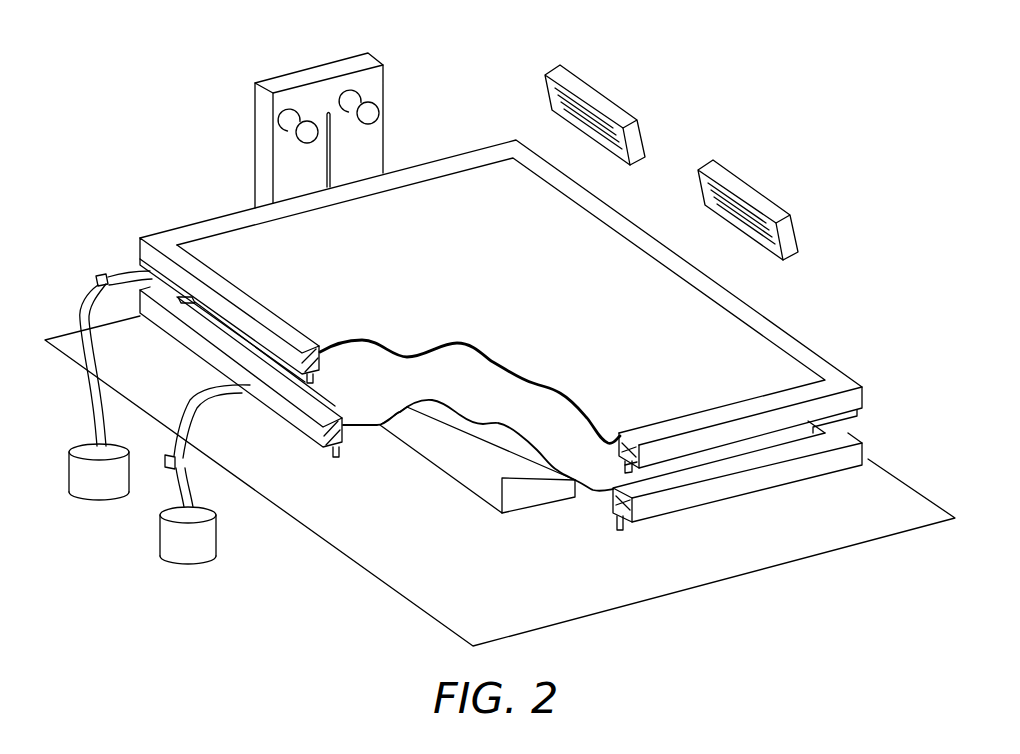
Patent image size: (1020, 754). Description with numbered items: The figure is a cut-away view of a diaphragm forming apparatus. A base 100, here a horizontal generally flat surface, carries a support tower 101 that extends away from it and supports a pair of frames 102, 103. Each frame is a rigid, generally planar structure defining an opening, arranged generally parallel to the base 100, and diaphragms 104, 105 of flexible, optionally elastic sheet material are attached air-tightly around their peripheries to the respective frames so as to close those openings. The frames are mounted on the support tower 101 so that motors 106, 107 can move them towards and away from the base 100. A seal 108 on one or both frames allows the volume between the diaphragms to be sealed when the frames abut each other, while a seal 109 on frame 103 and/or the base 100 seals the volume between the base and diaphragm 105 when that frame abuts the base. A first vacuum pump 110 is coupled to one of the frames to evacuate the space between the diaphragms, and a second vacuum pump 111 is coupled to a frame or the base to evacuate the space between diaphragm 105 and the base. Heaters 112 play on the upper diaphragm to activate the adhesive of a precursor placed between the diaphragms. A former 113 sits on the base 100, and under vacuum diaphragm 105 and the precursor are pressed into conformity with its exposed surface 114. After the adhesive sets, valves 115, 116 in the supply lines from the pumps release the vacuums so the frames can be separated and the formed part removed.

The base 100 is at (768, 555).
The support tower 101 is at (313, 72).
The frame 102 is at (812, 360).
The frame 103 is at (843, 435).
The diaphragm 104 is at (598, 273).
The diaphragm 105 is at (433, 383).
The motor 106 is at (296, 130).
The motor 107 is at (379, 115).
The seal 108 is at (318, 379).
The seal 109 is at (336, 452).
The first vacuum pump 110 is at (100, 502).
The second vacuum pump 111 is at (190, 563).
The heaters 112 is at (592, 95).
The former 113 is at (441, 476).
The exposed surface 114 is at (498, 455).
The valve 115 is at (100, 275).
The valve 116 is at (168, 468).